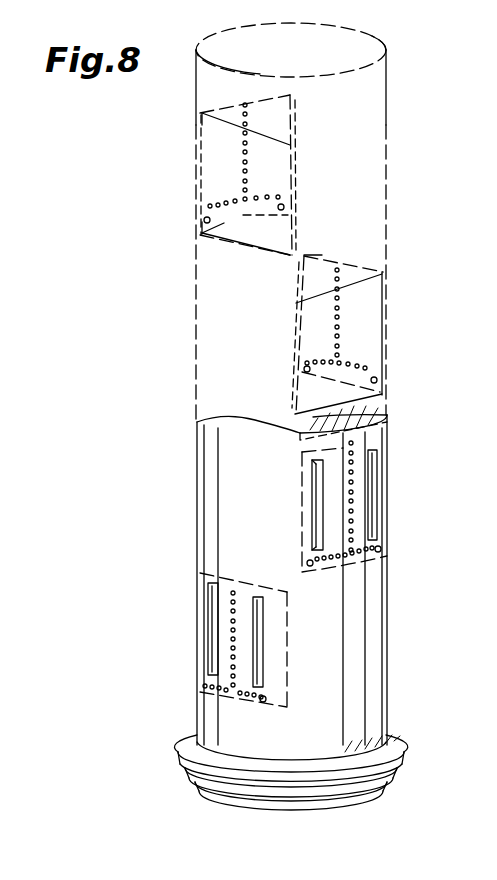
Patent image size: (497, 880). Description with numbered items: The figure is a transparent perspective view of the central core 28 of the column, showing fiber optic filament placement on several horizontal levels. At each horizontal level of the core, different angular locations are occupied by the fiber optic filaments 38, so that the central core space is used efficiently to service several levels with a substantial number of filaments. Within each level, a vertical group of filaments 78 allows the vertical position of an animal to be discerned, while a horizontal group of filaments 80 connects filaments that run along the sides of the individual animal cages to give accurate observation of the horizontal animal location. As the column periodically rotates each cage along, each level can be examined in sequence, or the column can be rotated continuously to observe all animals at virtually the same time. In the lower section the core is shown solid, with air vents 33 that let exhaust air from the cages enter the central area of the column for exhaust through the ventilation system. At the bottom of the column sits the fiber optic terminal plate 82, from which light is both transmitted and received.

The cylindrical housing 28 is at (388, 105).
The air vents 33 is at (318, 505).
The fiber optic filaments 38 is at (228, 200).
The vertical group of filaments 78 is at (243, 101).
The horizontal group of filaments 80 is at (228, 205).
The fiber optic terminal plate 82 is at (383, 795).